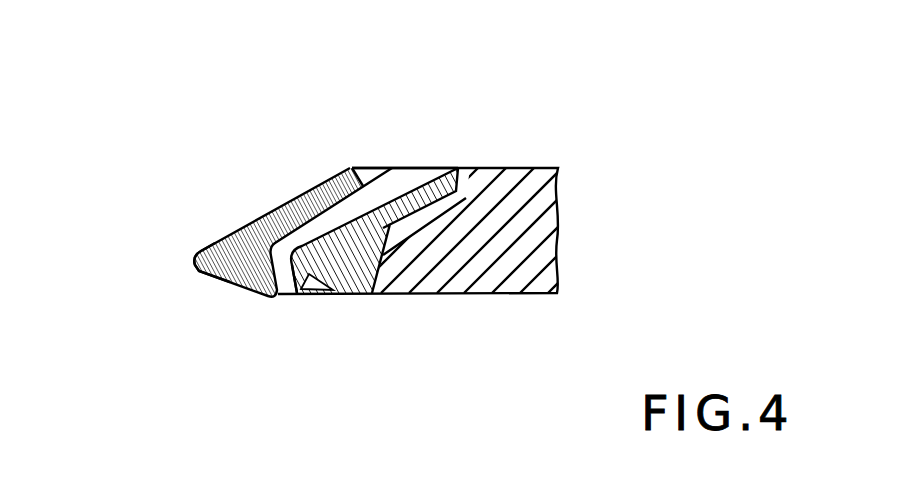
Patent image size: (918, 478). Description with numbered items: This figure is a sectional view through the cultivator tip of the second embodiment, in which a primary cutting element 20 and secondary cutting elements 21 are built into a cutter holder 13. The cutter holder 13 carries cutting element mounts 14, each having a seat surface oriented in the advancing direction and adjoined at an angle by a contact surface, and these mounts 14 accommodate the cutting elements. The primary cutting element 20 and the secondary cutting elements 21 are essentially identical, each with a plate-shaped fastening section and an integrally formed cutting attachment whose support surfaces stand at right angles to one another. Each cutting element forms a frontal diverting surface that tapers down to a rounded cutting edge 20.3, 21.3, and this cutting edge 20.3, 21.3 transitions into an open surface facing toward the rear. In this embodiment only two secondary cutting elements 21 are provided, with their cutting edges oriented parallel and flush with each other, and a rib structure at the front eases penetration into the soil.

The cutter holder 13 is at (520, 177).
The cutting element mounts 14 is at (353, 161).
The primary cutting element 20 is at (281, 203).
The cutting edge 20.3 is at (193, 260).
The secondary cutting element 21 is at (417, 190).
The cutting edge 21.3 is at (288, 262).